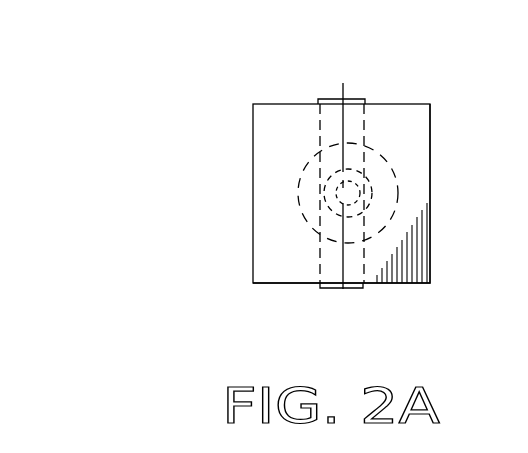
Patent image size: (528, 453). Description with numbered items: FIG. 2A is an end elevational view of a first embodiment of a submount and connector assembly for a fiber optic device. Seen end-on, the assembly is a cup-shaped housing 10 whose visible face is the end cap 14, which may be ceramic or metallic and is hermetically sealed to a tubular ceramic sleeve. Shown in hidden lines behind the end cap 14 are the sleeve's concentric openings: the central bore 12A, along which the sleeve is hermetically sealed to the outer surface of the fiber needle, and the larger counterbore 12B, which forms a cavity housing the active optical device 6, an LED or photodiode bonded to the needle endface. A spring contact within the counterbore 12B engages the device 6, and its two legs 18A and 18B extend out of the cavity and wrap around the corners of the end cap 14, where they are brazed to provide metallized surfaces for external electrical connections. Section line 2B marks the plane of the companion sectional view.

The cup-shaped housing 10 is at (208, 64).
The end cap 14 is at (405, 108).
The leg of spring contact 18B is at (353, 98).
The leg of spring contact 18A is at (355, 288).
The section line 2B- 2B is at (345, 73).
The counterbore 12B is at (305, 151).
The central bore 12A is at (300, 214).
The active optical device 6 is at (332, 194).